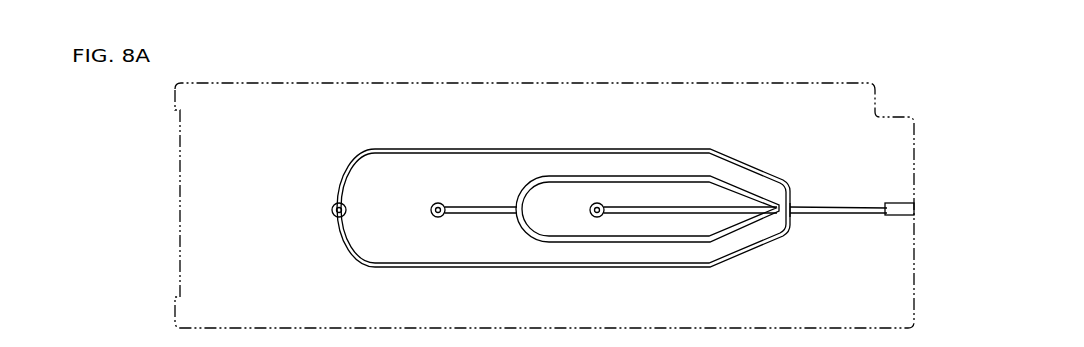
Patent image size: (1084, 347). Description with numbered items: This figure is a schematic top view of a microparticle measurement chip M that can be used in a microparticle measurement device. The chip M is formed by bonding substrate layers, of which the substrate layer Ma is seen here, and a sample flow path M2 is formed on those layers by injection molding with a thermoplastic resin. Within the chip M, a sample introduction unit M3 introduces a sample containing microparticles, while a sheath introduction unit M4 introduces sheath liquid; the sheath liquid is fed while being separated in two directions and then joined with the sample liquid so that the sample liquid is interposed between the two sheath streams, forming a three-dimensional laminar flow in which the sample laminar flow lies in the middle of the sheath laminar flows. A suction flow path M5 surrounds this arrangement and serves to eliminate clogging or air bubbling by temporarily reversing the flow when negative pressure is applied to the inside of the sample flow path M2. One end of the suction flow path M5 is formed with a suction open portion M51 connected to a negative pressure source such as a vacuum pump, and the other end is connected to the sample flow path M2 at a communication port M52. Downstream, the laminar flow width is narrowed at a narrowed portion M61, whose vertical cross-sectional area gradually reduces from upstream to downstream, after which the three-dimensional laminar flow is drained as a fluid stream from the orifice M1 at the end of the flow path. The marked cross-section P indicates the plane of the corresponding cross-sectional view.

The microparticle measurement chip M is at (854, 61).
The substrate layer Ma is at (544, 205).
The orifice M1 is at (914, 216).
The sample flow path M2 is at (863, 217).
The sample introduction unit M3 is at (598, 203).
The sheath introduction unit M4 is at (438, 203).
The suction flow path M5 is at (534, 148).
The suction open portion M51 is at (332, 210).
The communication port M52 is at (793, 200).
The narrowed portion M61 is at (824, 206).
The cross-section P- P is at (166, 208).